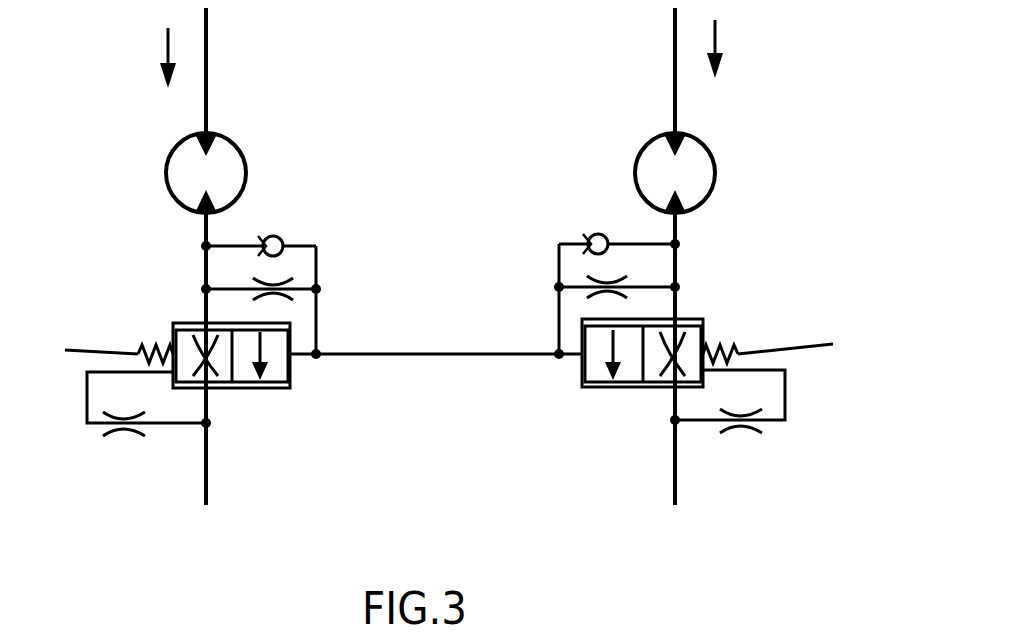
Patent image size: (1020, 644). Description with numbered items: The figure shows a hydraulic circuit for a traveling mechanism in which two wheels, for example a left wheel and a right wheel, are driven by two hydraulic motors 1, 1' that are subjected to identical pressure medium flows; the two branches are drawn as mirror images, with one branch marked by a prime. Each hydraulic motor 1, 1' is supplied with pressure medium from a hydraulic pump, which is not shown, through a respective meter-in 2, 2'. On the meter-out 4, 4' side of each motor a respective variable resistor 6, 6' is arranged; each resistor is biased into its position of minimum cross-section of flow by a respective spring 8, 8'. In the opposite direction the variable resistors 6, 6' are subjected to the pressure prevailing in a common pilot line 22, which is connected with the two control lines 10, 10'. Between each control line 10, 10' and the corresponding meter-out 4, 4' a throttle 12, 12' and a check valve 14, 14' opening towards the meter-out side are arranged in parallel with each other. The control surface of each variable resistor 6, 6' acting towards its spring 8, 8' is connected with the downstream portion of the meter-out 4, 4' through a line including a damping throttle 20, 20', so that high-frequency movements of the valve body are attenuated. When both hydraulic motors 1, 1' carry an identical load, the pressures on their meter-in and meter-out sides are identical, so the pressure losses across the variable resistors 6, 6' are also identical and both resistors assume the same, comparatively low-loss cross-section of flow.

The hydraulic motor 1 is at (243, 169).
The meter-in 2 is at (229, 71).
The meter-out 4 is at (261, 349).
The variable resistor 6 is at (270, 413).
The spring 8 is at (103, 347).
The control line 10 is at (355, 302).
The throttle 12 is at (298, 271).
The check valve 14 is at (298, 232).
The damping throttle 20 is at (146, 454).
The pilot line 22 is at (443, 356).
The hydraulic motor 1' is at (718, 169).
The meter-in 2' is at (734, 71).
The meter-out 4' is at (736, 349).
The variable resistor 6' is at (729, 318).
The spring 8' is at (790, 347).
The control line 10' is at (520, 301).
The throttle 12' is at (585, 263).
The check valve 14' is at (611, 205).
The damping throttle 20' is at (730, 448).